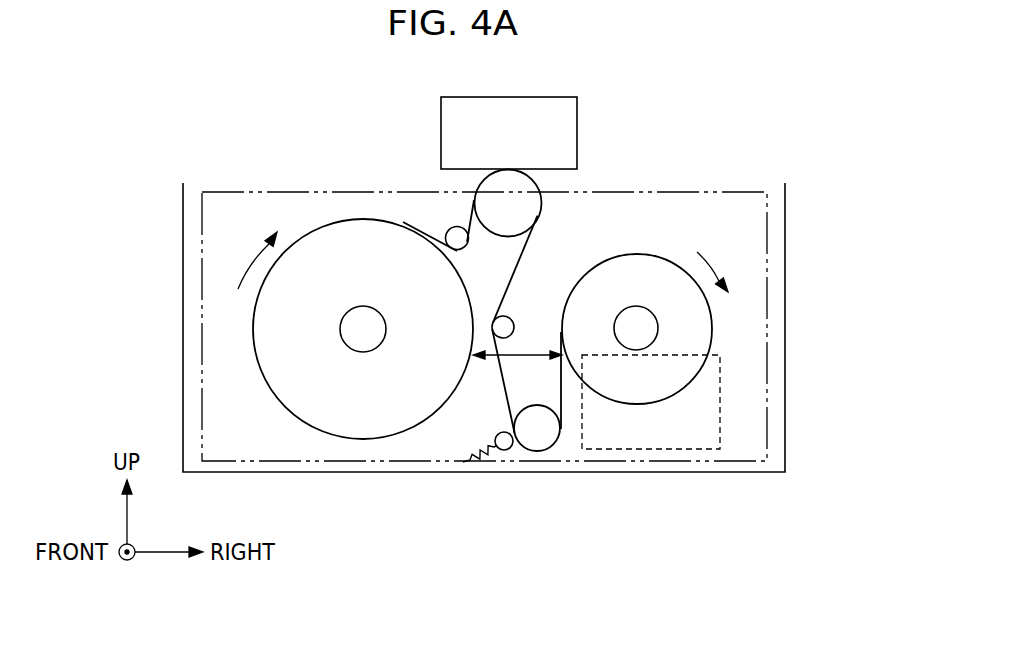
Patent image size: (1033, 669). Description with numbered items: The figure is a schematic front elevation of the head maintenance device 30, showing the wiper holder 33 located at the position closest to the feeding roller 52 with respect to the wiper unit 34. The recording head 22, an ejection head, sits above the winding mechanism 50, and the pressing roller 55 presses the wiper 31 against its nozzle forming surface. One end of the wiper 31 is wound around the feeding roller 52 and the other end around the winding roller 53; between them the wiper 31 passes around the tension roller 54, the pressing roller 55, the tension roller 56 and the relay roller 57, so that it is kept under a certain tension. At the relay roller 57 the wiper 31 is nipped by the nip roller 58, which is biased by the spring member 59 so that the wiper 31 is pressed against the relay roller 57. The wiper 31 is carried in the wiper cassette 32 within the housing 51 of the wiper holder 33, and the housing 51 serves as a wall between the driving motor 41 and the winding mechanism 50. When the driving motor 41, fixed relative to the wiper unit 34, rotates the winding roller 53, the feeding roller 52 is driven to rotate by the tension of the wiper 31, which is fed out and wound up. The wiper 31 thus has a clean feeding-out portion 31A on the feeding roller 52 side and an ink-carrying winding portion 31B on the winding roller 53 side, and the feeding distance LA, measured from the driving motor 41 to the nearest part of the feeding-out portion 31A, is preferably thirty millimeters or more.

The recording head 22 is at (545, 101).
The head maintenance device 30 is at (747, 116).
The wiper 31 is at (527, 252).
The feeding-out portion 31A is at (316, 247).
The winding portion 31B is at (663, 267).
The wiper cassette 32 is at (687, 191).
The wiper holder 33 is at (812, 183).
The wiper unit 34 is at (652, 512).
The driving motor 41 is at (687, 450).
The winding mechanism 50 is at (445, 495).
The housing 51 is at (787, 222).
The feeding roller 52 is at (363, 312).
The winding roller 53 is at (636, 312).
The tension roller 54 is at (453, 233).
The pressing roller 55 is at (541, 207).
The tension roller 56 is at (505, 321).
The relay roller 57 is at (536, 416).
The nip roller 58 is at (496, 437).
The spring member 59 is at (476, 452).
The feeding distance LA is at (517, 344).